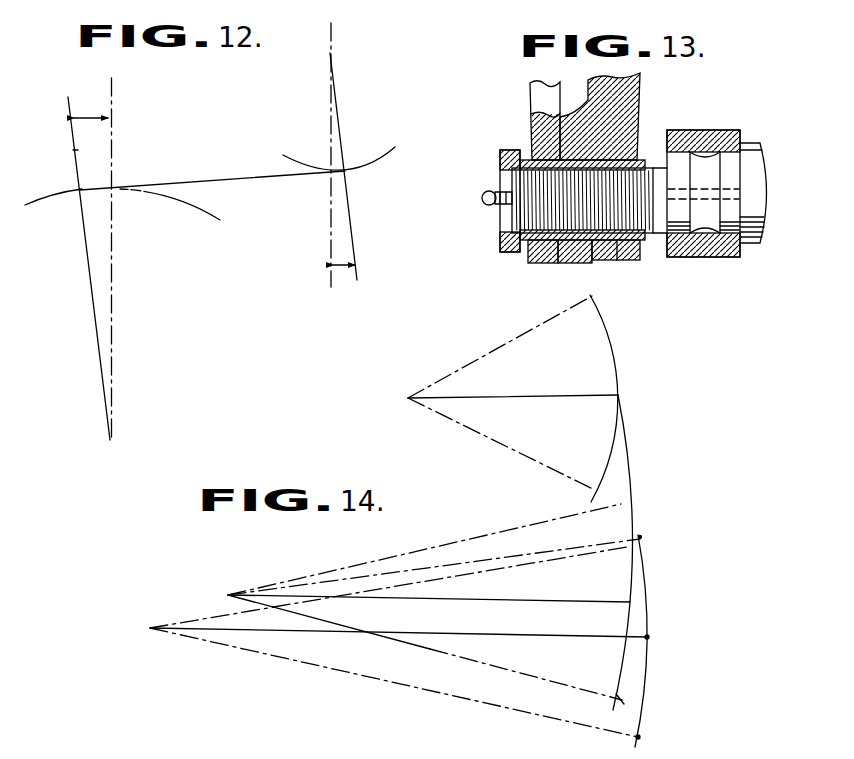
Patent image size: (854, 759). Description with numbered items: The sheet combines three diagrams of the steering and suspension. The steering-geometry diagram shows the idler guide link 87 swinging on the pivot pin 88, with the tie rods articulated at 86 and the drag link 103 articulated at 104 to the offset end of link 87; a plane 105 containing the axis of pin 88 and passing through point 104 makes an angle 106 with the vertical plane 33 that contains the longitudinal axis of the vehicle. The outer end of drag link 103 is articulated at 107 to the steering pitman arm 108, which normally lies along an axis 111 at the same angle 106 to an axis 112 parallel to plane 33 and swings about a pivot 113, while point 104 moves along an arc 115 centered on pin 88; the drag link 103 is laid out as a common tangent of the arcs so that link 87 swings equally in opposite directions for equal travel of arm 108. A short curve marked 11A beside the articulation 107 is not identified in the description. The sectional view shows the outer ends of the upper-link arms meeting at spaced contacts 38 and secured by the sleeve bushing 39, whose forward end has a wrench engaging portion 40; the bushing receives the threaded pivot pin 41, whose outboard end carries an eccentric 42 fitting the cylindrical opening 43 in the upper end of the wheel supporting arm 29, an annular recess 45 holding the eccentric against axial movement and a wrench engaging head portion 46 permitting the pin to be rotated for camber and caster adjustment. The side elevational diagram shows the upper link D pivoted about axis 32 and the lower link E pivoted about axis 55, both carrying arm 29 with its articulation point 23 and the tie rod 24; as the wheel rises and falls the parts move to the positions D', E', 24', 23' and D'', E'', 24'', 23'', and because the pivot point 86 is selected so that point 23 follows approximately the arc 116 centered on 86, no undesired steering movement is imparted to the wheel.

In FIG. 12, the reference arc 11A is at (299, 136).
In FIG. 14, the point of articulation 23 is at (668, 630).
In FIG. 14, the upper limit position of articulation point 23' is at (666, 527).
In FIG. 14, the lower limit position of articulation point 23'' is at (664, 740).
In FIG. 14, the tie rod 24 is at (265, 658).
In FIG. 14, the upper limit position of tie rod 24' is at (388, 587).
In FIG. 14, the lower limit position of tie rod 24'' is at (394, 682).
In FIG. 13, the wheel supporting arm 29 is at (697, 258).
In FIG. 14, the wheel supporting arm 29 is at (628, 465).
In FIG. 13, the axis 32 is at (406, 397).
In FIG. 12, the vertical plane 33 is at (112, 106).
In FIG. 13, the spaced contacts 38 is at (530, 263).
In FIG. 13, the sleeve bushing 39 is at (596, 262).
In FIG. 13, the wrench engaging portion 40 is at (500, 247).
In FIG. 13, the threaded pivot pin 41 is at (620, 262).
In FIG. 13, the eccentric 42 is at (735, 165).
In FIG. 13, the cylindrical opening 43 is at (712, 258).
In FIG. 13, the annular recess 45 is at (700, 155).
In FIG. 13, the wrench engaging head portion 46 is at (752, 148).
In FIG. 14, the axis of support 55 is at (228, 594).
In FIG. 14, the point of articulation 86 is at (150, 628).
In FIG. 12, the idler guide link 87 is at (88, 256).
In FIG. 12, the pivot pin 88 is at (110, 413).
In FIG. 12, the drag link 103 is at (240, 178).
In FIG. 12, the point of articulation 104 is at (80, 193).
In FIG. 12, the plane 105 is at (76, 151).
In FIG. 12, the angle 106 is at (74, 118).
In FIG. 12, the point of articulation 107 is at (347, 165).
In FIG. 12, the steering pitman arm 108 is at (341, 118).
In FIG. 12, the axis 111 is at (352, 224).
In FIG. 12, the axis 112 is at (330, 236).
In FIG. 12, the pivot 113 is at (333, 78).
In FIG. 12, the arc 115 is at (178, 203).
In FIG. 14, the arc 116 is at (648, 675).
In FIG. 13, the upper link D is at (466, 382).
In FIG. 13, the upper limit position of upper link D' is at (500, 347).
In FIG. 13, the lower limit position of upper link D'' is at (501, 444).
In FIG. 14, the lower link E is at (434, 568).
In FIG. 14, the upper limit position of lower link E' is at (424, 549).
In FIG. 14, the lower limit position of lower link E'' is at (426, 649).